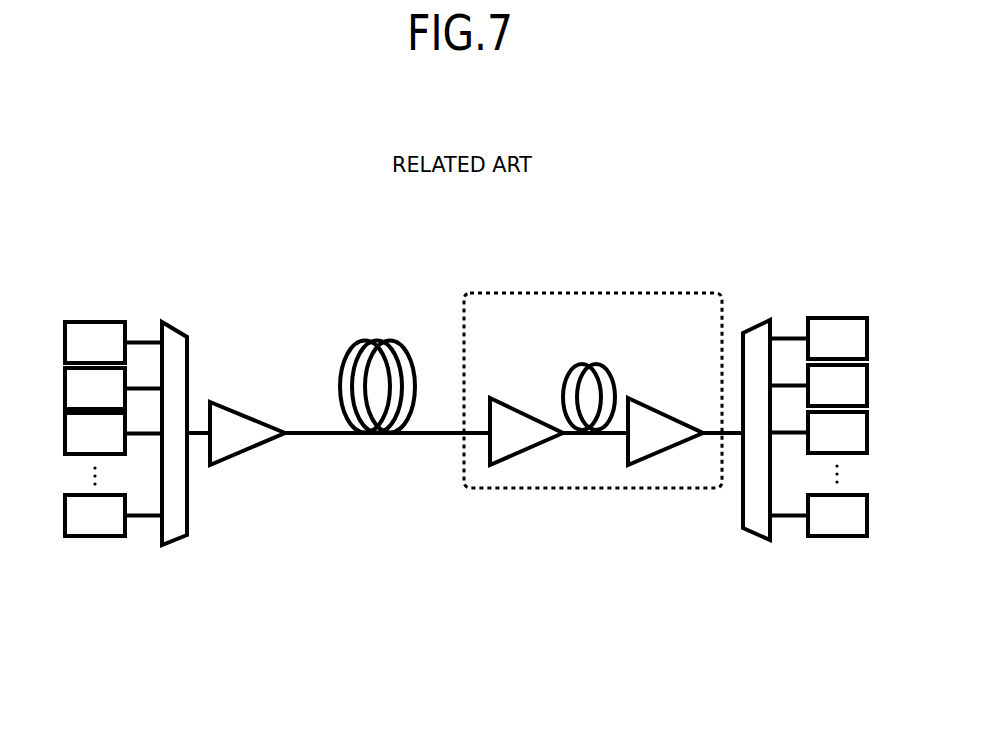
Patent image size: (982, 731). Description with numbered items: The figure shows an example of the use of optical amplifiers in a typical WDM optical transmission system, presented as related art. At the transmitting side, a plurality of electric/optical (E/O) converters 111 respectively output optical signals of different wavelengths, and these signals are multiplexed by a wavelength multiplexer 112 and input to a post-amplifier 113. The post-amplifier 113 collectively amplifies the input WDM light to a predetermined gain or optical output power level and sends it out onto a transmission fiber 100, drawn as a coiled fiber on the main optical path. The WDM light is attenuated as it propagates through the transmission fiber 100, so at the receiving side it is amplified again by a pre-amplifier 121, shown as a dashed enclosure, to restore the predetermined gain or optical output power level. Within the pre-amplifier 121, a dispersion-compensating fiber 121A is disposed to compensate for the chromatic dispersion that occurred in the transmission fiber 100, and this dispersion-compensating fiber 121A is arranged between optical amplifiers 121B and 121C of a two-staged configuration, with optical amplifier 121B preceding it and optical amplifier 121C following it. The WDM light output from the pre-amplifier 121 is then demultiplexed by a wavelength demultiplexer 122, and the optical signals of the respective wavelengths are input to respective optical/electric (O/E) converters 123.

The transmission fiber 100 is at (352, 340).
The electric/optical (E/O) converters 111 is at (109, 303).
The wavelength multiplexer 112 is at (185, 540).
The post-amplifier 113 is at (242, 407).
The pre-amplifier 121 is at (501, 292).
The dispersion-compensating fiber 121A is at (596, 365).
The optical amplifier 121B is at (523, 412).
The optical amplifier 121C is at (672, 410).
The wavelength demultiplexer 122 is at (752, 533).
The optical/electric (O/E) converters 123 is at (821, 300).